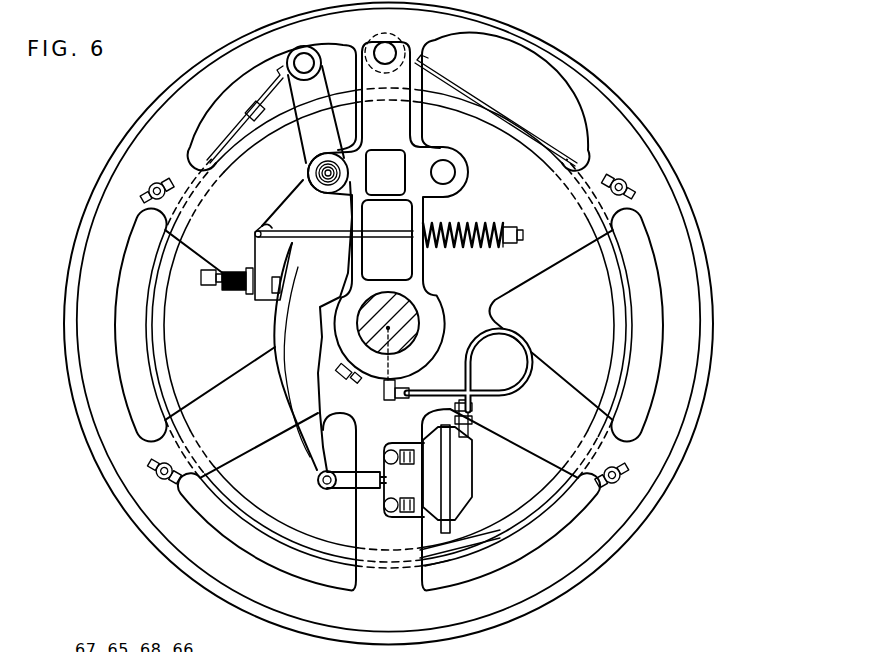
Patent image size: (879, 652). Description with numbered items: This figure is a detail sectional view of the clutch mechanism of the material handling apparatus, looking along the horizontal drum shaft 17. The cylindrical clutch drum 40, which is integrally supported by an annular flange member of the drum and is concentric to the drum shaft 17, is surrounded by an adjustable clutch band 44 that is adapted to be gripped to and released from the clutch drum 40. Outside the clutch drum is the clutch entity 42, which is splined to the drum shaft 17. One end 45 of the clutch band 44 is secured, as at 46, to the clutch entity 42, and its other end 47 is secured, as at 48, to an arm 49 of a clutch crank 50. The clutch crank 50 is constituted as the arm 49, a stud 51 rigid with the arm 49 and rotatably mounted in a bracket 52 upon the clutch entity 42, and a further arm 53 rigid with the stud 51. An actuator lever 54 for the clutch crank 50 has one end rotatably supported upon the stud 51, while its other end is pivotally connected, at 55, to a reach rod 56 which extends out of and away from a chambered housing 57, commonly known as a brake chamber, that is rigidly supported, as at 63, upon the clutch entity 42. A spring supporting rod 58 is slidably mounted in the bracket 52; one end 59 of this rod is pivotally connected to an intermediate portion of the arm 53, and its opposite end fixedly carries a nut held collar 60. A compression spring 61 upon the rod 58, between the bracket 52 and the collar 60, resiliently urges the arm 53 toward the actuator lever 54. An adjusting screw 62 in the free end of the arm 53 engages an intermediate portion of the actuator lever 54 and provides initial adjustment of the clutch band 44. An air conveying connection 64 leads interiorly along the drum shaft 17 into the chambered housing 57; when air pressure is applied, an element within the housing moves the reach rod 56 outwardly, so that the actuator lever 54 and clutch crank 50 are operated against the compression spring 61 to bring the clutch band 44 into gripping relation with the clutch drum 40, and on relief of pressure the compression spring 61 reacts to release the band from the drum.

The drum shaft 17 is at (414, 310).
The cylindrical clutch drum 40 is at (165, 372).
The clutch entity 42 is at (683, 332).
The adjustable clutch band 44 is at (292, 543).
The end of clutch band 45 is at (420, 68).
The securing point of band end to clutch entity 46 is at (387, 52).
The other end of clutch band 47 is at (273, 80).
The securing point of band end to crank arm 48 is at (306, 59).
The arm of clutch crank 49 is at (313, 120).
The clutch crank 50 is at (302, 172).
The stud 51 is at (323, 180).
The bracket 52 is at (360, 171).
The arm of clutch crank 53 is at (288, 217).
The actuator lever 54 is at (292, 320).
The pivotal connection 55 is at (323, 484).
The reach rod 56 is at (358, 490).
The chambered housing 57 is at (458, 502).
The spring supporting rod 58 is at (395, 234).
The end of spring supporting rod 59 is at (254, 233).
The nut held collar 60 is at (505, 224).
The compression spring 61 is at (467, 248).
The adjusting screw 62 is at (233, 288).
The support of chambered housing 63 is at (406, 514).
The air conveying connection 64 is at (512, 394).